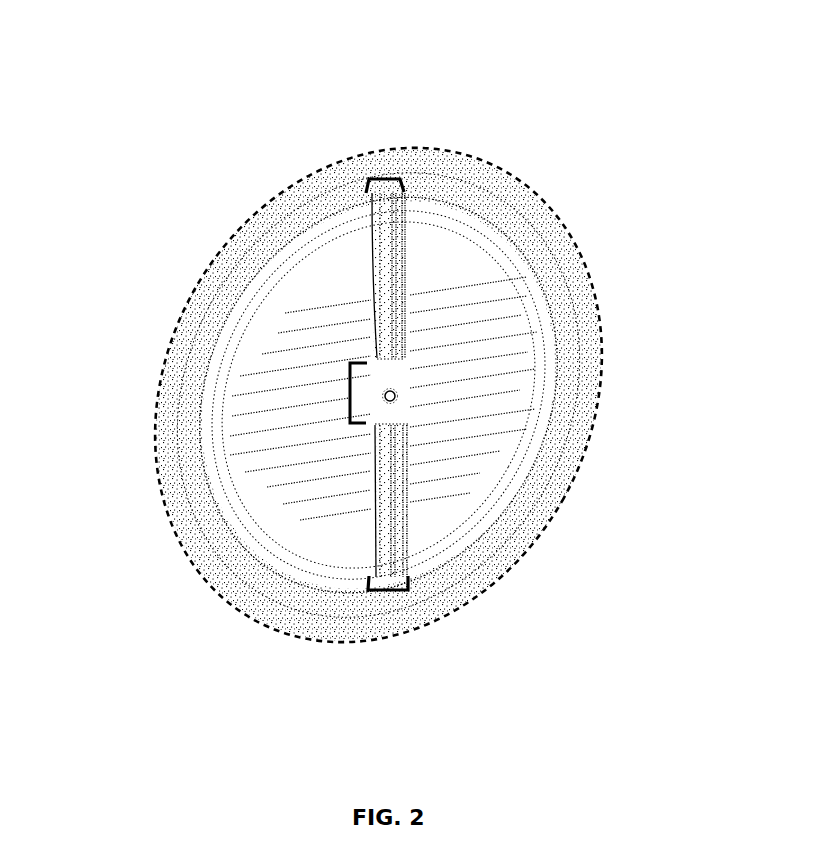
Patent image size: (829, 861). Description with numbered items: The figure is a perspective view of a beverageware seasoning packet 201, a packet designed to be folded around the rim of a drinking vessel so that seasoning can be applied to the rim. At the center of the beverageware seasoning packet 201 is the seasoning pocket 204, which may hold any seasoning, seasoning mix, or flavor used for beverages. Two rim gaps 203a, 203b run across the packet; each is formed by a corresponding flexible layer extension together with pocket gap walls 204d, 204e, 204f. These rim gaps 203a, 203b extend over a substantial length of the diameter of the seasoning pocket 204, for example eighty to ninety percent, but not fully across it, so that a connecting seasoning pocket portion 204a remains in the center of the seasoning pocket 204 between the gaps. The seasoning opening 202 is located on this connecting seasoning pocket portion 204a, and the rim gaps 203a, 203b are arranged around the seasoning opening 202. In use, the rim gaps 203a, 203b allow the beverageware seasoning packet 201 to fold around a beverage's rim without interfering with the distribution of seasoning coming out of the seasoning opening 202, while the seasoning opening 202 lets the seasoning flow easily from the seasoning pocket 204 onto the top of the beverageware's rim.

The beverageware seasoning packet 201 is at (492, 88).
The seasoning opening 202 is at (396, 397).
The rim gap 203a is at (383, 180).
The rim gap 203b is at (385, 591).
The seasoning pocket 204 is at (297, 250).
The connecting seasoning pocket portion 204a is at (350, 392).
The pocket gap wall 204d is at (405, 261).
The pocket gap wall 204e is at (373, 303).
The pocket gap wall 204f is at (388, 361).